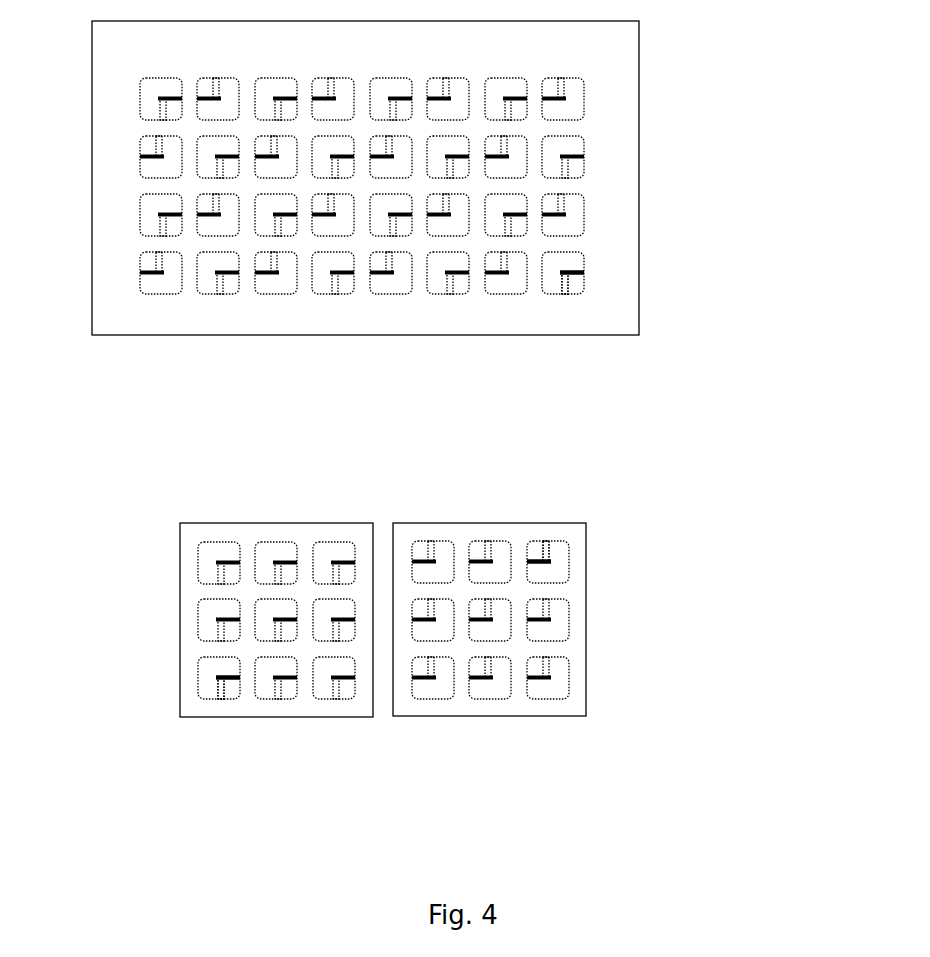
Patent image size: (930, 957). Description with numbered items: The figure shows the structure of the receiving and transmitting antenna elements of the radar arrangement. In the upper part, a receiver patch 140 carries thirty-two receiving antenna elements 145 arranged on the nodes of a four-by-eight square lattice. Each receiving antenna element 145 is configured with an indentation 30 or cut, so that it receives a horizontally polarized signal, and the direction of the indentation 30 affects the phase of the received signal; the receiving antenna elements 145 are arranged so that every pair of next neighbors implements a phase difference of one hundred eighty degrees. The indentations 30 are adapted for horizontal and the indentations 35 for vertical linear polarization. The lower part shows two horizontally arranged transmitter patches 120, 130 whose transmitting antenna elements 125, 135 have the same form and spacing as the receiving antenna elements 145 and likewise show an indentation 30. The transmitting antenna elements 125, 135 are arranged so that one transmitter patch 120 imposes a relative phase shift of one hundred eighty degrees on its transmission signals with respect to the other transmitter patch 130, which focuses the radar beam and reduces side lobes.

The receiver patch 140 is at (639, 60).
The receiving antenna elements 145 is at (582, 283).
The transmitter patch 120 is at (240, 522).
The transmitting antenna elements 125 is at (200, 688).
The transmitter patch 130 is at (586, 540).
The transmitting antenna elements 135 is at (568, 688).
The indentation 30 is at (573, 280).
The indentation 35 is at (560, 280).